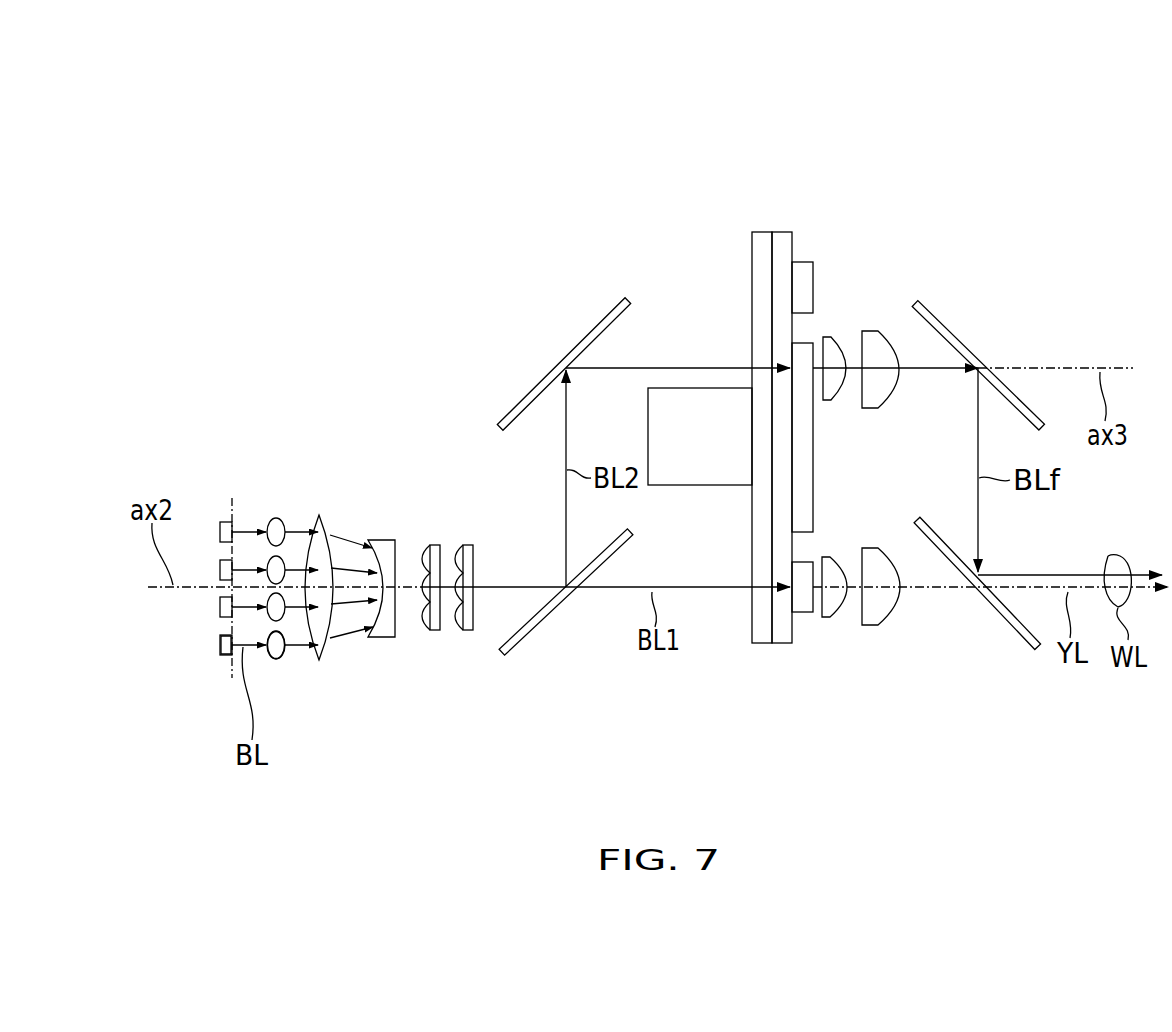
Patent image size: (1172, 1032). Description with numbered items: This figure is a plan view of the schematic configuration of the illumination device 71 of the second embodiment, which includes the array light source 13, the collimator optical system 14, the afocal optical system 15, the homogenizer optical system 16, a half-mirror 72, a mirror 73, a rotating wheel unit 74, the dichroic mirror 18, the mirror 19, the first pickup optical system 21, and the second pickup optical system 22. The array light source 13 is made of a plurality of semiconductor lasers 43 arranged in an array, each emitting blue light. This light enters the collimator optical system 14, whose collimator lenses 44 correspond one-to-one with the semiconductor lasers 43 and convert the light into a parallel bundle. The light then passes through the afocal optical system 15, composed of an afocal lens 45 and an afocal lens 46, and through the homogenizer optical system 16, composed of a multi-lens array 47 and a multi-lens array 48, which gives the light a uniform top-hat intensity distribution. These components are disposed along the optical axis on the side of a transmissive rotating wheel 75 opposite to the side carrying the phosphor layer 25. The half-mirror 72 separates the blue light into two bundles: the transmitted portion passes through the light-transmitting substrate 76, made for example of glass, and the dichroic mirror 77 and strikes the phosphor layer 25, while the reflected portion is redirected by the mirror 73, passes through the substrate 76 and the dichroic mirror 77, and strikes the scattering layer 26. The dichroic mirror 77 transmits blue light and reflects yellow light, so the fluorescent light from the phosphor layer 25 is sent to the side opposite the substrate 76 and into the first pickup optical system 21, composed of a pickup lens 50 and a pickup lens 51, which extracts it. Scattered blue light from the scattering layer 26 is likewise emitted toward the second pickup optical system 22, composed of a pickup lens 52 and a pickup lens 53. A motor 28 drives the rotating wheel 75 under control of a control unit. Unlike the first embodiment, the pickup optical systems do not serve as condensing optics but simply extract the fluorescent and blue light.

The array light source 13 is at (207, 567).
The collimator optical system 14 is at (272, 567).
The afocal optical system 15 is at (350, 525).
The homogenizer optical system 16 is at (456, 527).
The dichroic mirror 18 is at (1005, 612).
The mirror 19 is at (955, 330).
The first pickup optical system 21 is at (861, 646).
The second pickup optical system 22 is at (865, 305).
The phosphor layer 25 is at (803, 603).
The scattering layer 26 is at (803, 458).
The motor 28 is at (700, 468).
The semiconductor laser 43 is at (228, 660).
The collimator lens 44 is at (277, 654).
The afocal lens 45 is at (322, 514).
The afocal lens 46 is at (387, 540).
The multi-lens array 47 is at (433, 546).
The multi-lens array 48 is at (475, 548).
The pickup lens 50 is at (830, 612).
The pickup lens 51 is at (873, 614).
The pickup lens 52 is at (828, 345).
The pickup lens 53 is at (875, 343).
The illumination device 71 is at (770, 413).
The half-mirror 72 is at (548, 621).
The mirror 73 is at (538, 388).
The rotating wheel unit 74 is at (685, 338).
The rotating wheel 75 is at (762, 461).
The substrate 76 is at (763, 237).
The dichroic mirror 77 is at (784, 237).